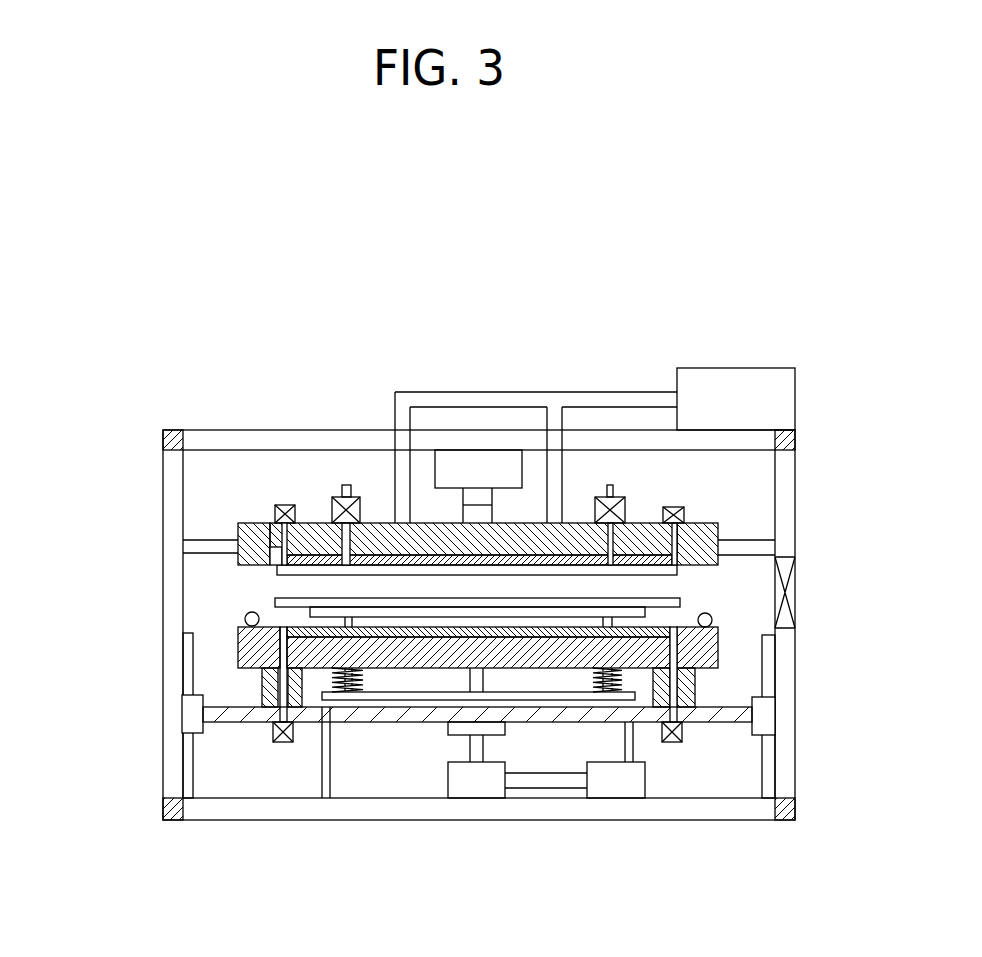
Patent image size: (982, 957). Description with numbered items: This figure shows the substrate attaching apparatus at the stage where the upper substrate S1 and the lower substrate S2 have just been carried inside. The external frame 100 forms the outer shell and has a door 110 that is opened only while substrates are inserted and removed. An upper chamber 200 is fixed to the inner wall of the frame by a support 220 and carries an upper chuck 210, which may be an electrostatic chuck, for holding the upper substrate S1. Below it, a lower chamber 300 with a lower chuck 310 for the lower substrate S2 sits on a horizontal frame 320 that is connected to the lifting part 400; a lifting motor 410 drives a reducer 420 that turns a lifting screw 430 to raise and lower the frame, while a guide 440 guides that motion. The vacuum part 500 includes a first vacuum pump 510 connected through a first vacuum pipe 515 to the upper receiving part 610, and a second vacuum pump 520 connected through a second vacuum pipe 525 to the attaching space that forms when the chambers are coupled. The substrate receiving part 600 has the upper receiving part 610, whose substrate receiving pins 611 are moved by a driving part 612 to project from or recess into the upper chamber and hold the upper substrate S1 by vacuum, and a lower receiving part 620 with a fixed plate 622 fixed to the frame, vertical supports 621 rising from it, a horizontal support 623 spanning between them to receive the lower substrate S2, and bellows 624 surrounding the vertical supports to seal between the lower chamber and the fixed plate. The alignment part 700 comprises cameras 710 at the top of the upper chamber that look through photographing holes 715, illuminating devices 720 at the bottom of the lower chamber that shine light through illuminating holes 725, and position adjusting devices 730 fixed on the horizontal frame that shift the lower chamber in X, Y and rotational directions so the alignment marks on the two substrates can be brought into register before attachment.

The external frame 100 is at (783, 467).
The door 110 is at (787, 582).
The upper chamber 200 is at (537, 536).
The upper chuck 210 is at (660, 566).
The support 220 is at (740, 543).
The lower chamber 300 is at (706, 643).
The lower chuck 310 is at (680, 605).
The horizontal frame 320 is at (718, 713).
The lifting part 400 is at (607, 823).
The lifting motor 410 is at (623, 785).
The reducer 420 is at (476, 787).
The lifting screw 430 is at (483, 742).
The guide 440 is at (720, 814).
The vacuum part 500 is at (595, 397).
The first vacuum pump 510 is at (492, 467).
The first vacuum pipe 515 is at (455, 408).
The second vacuum pump 520 is at (707, 378).
The second vacuum pipe 525 is at (593, 400).
The substrate receiving part 600 is at (406, 616).
The upper receiving part 610 is at (309, 442).
The substrate receiving pins 611 is at (317, 542).
The driving part 612 is at (344, 543).
The lower receiving part 620 is at (441, 768).
The vertical supports 621 is at (343, 693).
The fixed plate 622 is at (408, 695).
The horizontal support 623 is at (350, 653).
The bellows 624 is at (317, 680).
The alignment part 700 is at (362, 618).
The cameras 710 is at (275, 511).
The photographing holes 715 is at (270, 553).
The illuminating devices 720 is at (387, 744).
The illuminating holes 725 is at (282, 648).
The position adjusting device 730 is at (265, 683).
The upper substrate S1 is at (276, 570).
The lower substrate S2 is at (275, 602).